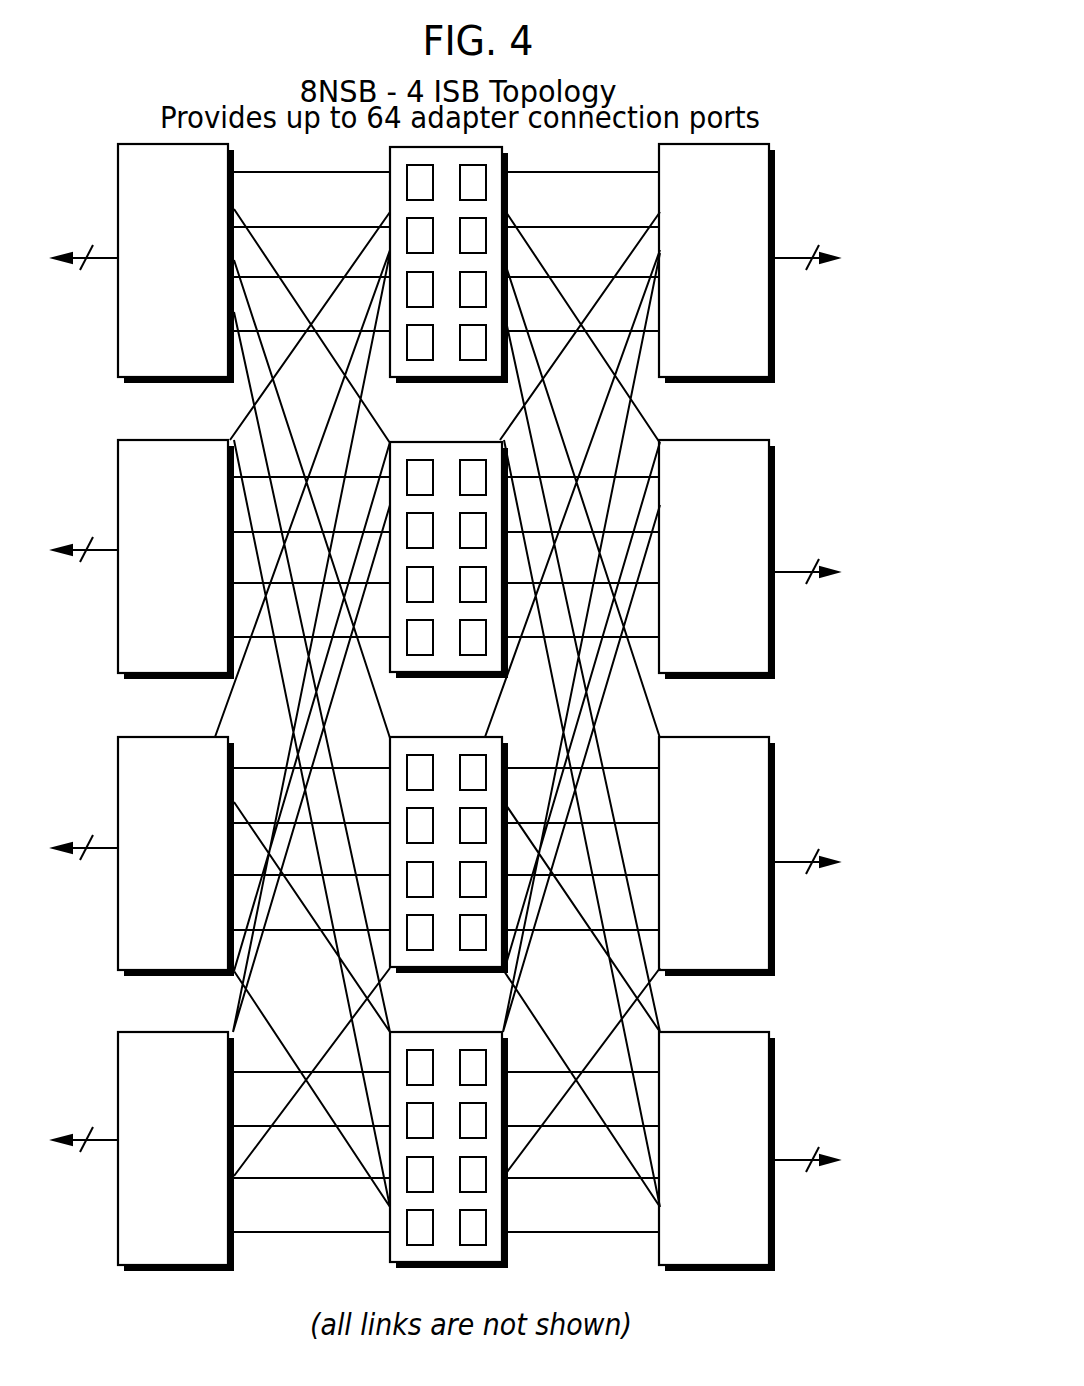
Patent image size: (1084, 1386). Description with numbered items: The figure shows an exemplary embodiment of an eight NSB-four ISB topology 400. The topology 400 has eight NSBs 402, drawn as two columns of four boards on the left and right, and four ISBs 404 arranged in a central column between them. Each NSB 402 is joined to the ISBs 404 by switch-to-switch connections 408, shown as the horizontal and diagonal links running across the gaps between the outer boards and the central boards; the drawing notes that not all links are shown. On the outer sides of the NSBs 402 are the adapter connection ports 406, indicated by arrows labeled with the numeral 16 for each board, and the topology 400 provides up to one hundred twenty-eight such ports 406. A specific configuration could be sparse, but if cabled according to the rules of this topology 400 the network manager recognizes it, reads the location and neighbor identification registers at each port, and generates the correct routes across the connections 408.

The 8 NSB-4 ISB topology 400 is at (667, 88).
The NSB 402 is at (233, 1275).
The ISB 404 is at (503, 1275).
The adapter connection ports 406 is at (445, 781).
The switch-to-switch connections 408 is at (370, 1262).
The adapter ports 16 is at (445, 728).